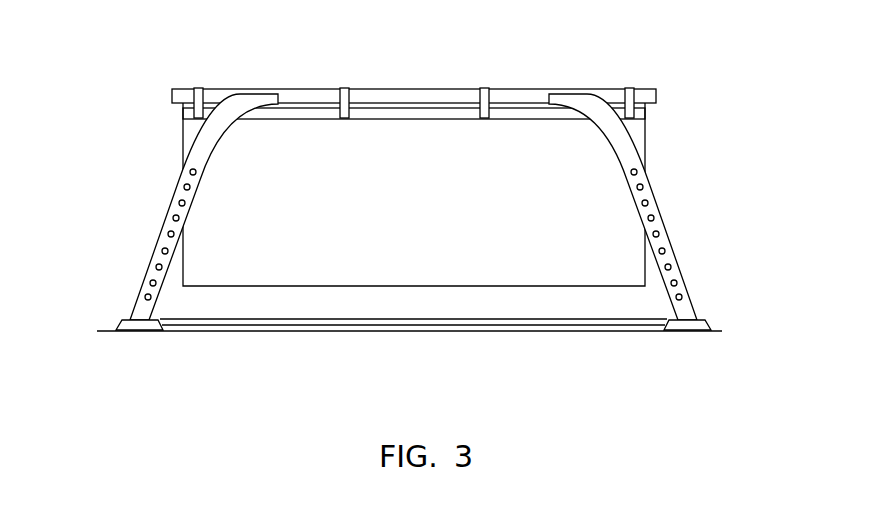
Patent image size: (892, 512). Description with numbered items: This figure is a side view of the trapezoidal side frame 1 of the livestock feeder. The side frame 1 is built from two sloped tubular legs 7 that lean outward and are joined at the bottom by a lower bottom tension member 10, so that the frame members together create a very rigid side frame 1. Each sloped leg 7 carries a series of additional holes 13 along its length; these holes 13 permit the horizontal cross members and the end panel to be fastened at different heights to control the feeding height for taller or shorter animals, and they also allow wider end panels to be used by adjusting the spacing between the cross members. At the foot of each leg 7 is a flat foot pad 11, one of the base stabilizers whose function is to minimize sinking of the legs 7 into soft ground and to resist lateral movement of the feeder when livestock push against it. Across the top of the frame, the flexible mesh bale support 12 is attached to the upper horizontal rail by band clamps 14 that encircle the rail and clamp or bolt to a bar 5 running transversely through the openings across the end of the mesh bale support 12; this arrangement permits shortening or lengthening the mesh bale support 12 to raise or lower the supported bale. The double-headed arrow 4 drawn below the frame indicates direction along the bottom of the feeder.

The side frame 1 is at (178, 162).
The direction of movement 4 is at (401, 305).
The bar 5 is at (651, 118).
The sloped tubular legs 7 is at (640, 207).
The lower bottom tension member 10 is at (413, 308).
The flat foot pads 11 is at (391, 306).
The mesh bale support 12 is at (649, 145).
The holes 13 is at (445, 234).
The band clamps 14 is at (627, 86).